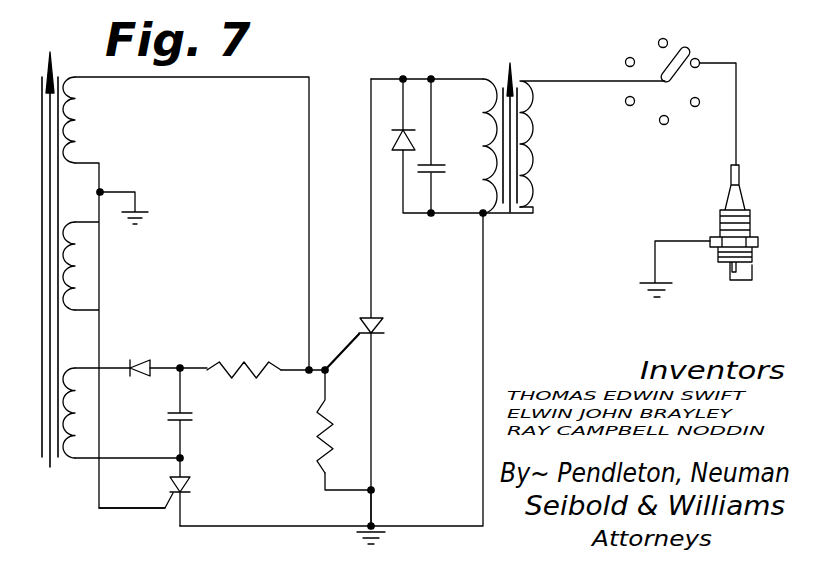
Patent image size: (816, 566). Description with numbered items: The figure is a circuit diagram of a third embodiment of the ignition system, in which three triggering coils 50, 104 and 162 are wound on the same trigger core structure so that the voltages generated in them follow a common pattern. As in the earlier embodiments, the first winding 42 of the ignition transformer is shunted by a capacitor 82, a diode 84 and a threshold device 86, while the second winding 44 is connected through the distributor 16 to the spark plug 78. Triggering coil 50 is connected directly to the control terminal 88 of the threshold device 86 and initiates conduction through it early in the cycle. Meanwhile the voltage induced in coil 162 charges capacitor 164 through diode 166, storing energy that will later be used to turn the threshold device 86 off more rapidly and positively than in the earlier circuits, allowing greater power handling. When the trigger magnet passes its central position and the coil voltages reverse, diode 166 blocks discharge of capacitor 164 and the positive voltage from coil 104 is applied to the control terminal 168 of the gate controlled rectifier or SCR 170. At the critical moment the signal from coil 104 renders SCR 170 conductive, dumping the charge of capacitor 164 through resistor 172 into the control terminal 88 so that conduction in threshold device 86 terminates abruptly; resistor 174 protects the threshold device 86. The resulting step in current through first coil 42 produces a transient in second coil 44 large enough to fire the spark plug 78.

The distributor 16 is at (690, 44).
The first winding 42 is at (492, 134).
The second winding 44 is at (534, 152).
The triggering coil 50 is at (74, 119).
The spark plug 78 is at (742, 205).
The capacitor 82 is at (442, 168).
The diode 84 is at (398, 148).
The threshold device 86 is at (381, 330).
The control terminal 88 is at (345, 354).
The triggering coil 104 is at (76, 268).
The triggering coil 162 is at (73, 436).
The capacitor 164 is at (192, 416).
The diode 166 is at (143, 349).
The control terminal 168 is at (117, 509).
The gate controlled rectifier (SCR) 170 is at (189, 483).
The resistor 172 is at (278, 362).
The resistor 174 is at (318, 450).